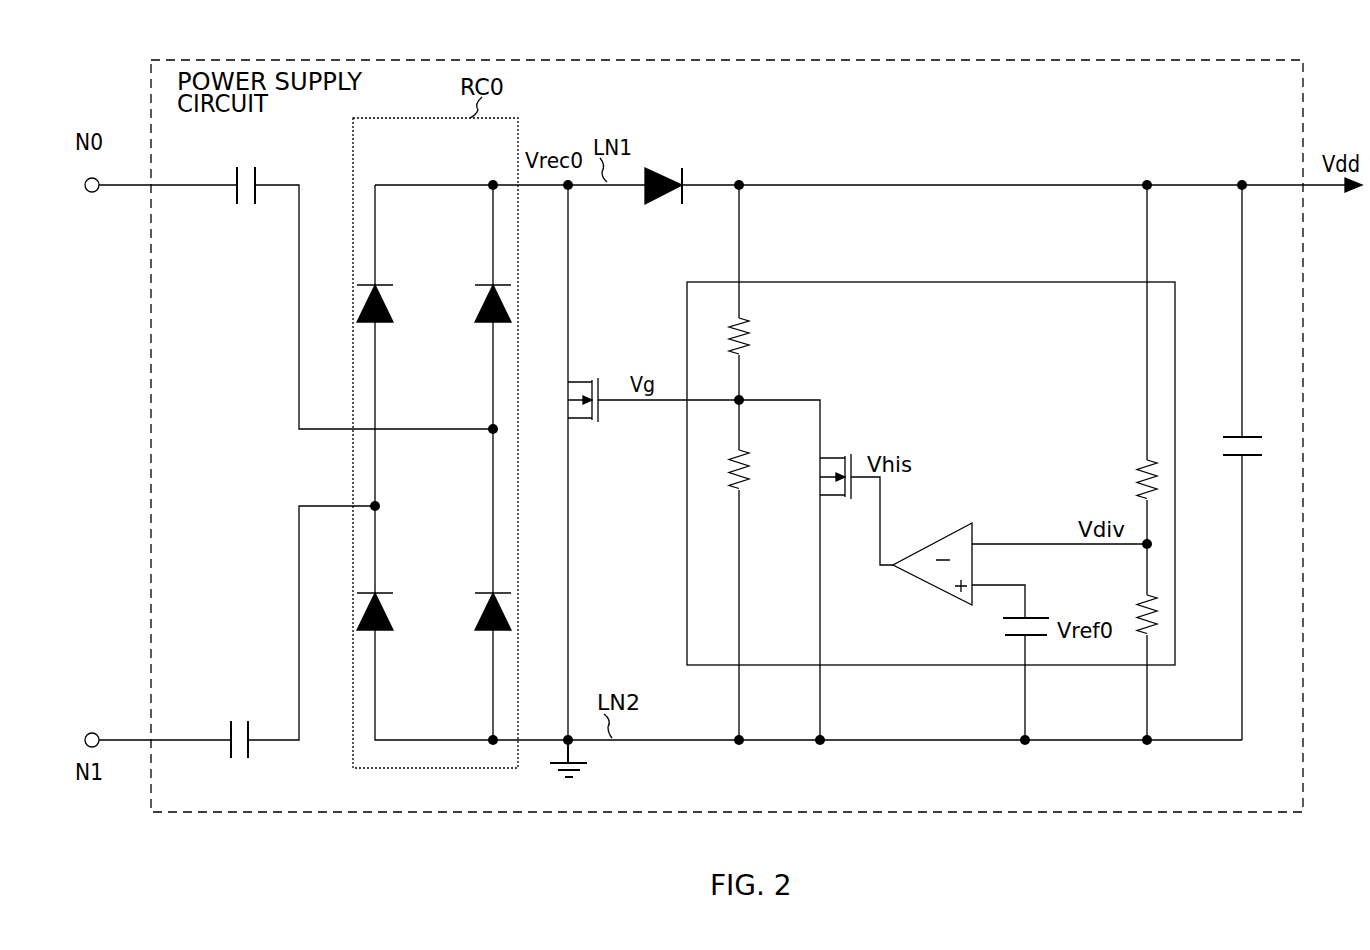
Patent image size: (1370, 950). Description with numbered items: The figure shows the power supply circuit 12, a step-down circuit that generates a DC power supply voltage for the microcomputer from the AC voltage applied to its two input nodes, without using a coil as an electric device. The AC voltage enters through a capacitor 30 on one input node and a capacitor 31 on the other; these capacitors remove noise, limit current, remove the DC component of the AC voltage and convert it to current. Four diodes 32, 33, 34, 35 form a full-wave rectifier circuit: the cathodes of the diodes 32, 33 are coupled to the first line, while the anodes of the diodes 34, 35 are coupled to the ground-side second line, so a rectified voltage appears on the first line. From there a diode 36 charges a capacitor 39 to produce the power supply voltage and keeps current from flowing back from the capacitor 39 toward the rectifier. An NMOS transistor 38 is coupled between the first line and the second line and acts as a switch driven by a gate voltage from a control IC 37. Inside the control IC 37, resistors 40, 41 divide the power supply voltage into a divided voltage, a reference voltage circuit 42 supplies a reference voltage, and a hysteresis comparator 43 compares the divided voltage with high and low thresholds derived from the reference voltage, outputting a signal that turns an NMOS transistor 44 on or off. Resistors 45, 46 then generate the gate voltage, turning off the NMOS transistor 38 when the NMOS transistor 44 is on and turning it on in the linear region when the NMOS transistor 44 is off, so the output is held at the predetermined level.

The power supply circuit 12 is at (989, 59).
The capacitor 30 is at (236, 176).
The capacitor 31 is at (230, 722).
The diode 32 is at (476, 316).
The diode 33 is at (393, 316).
The diode 34 is at (476, 623).
The diode 35 is at (393, 623).
The diode 36 is at (666, 182).
The control IC 37 is at (1176, 341).
The NMOS transistor 38 is at (588, 382).
The capacitor 39 is at (1255, 436).
The resistor 40 is at (1137, 471).
The resistor 41 is at (1137, 606).
The reference voltage circuit 42 is at (1034, 616).
The hysteresis comparator 43 is at (972, 526).
The NMOS transistor 44 is at (835, 458).
The resistor 45 is at (751, 337).
The resistor 46 is at (751, 472).